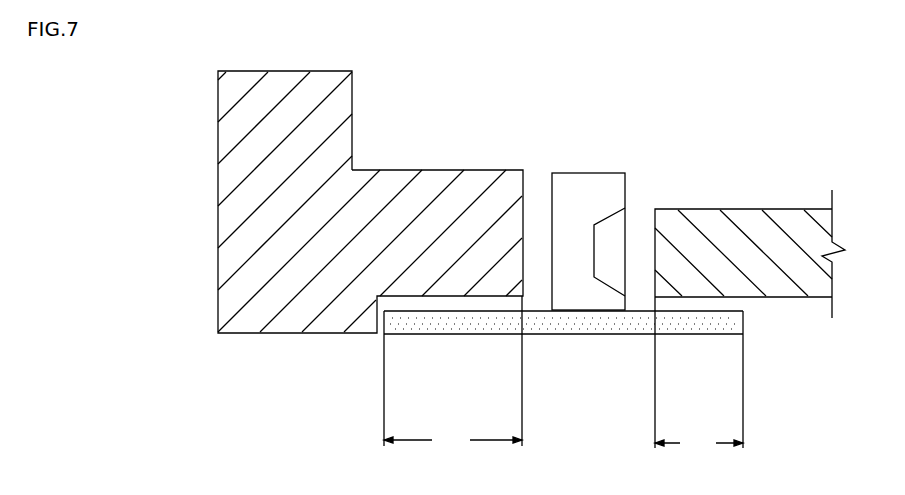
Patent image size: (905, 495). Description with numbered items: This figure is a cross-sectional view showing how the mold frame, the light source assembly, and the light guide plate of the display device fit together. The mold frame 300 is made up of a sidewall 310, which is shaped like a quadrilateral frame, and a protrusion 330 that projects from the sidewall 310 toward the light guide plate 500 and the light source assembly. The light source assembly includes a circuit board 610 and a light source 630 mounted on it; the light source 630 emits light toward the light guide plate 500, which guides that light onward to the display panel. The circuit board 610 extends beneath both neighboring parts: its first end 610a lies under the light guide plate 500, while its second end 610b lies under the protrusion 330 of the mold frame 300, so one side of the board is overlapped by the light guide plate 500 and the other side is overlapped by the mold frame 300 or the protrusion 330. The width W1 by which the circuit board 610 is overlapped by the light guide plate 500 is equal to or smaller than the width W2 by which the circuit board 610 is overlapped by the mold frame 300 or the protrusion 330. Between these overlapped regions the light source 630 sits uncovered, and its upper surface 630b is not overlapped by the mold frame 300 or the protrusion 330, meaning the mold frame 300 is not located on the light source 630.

The mold frame 300 is at (157, 130).
The sidewall 310 is at (273, 142).
The protrusion 330 is at (382, 250).
The light guide plate 500 is at (748, 220).
The circuit board 610 is at (588, 322).
The first end of the circuit board 610a is at (745, 325).
The second end of the circuit board 610b is at (385, 323).
The light source 630 is at (585, 152).
The upper surface of the light source 630b is at (575, 173).
The width by which the circuit board is overlapped by the light guide plate W1 is at (699, 377).
The width by which the circuit board is overlapped by the mold frame or protrusion W2 is at (453, 375).